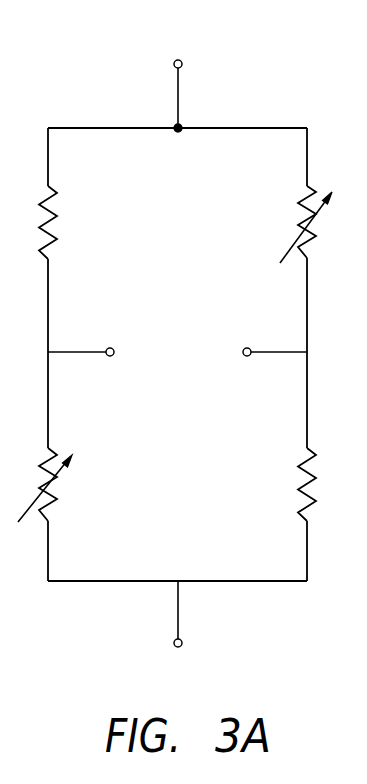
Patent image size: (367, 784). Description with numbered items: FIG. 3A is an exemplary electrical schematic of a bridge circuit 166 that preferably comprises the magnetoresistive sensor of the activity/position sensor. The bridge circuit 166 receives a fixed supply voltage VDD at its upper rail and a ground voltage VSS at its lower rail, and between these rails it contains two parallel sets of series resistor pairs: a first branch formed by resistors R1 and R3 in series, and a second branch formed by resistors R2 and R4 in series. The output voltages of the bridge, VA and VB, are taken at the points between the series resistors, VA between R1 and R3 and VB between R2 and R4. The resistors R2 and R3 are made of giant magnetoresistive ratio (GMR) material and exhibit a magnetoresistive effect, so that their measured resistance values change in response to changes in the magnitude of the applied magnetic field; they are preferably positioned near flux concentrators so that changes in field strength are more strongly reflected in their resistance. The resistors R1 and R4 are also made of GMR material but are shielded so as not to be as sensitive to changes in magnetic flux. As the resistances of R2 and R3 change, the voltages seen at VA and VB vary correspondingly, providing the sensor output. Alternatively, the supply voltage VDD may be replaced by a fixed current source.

The bridge circuit 166 is at (120, 112).
The resistor R1 is at (73, 222).
The resistor R2 is at (320, 224).
The resistor R3 is at (61, 485).
The resistor R4 is at (329, 485).
The output voltage VA is at (99, 349).
The output voltage VB is at (255, 349).
The supply voltage VDD is at (179, 73).
The ground voltage VSS is at (177, 635).